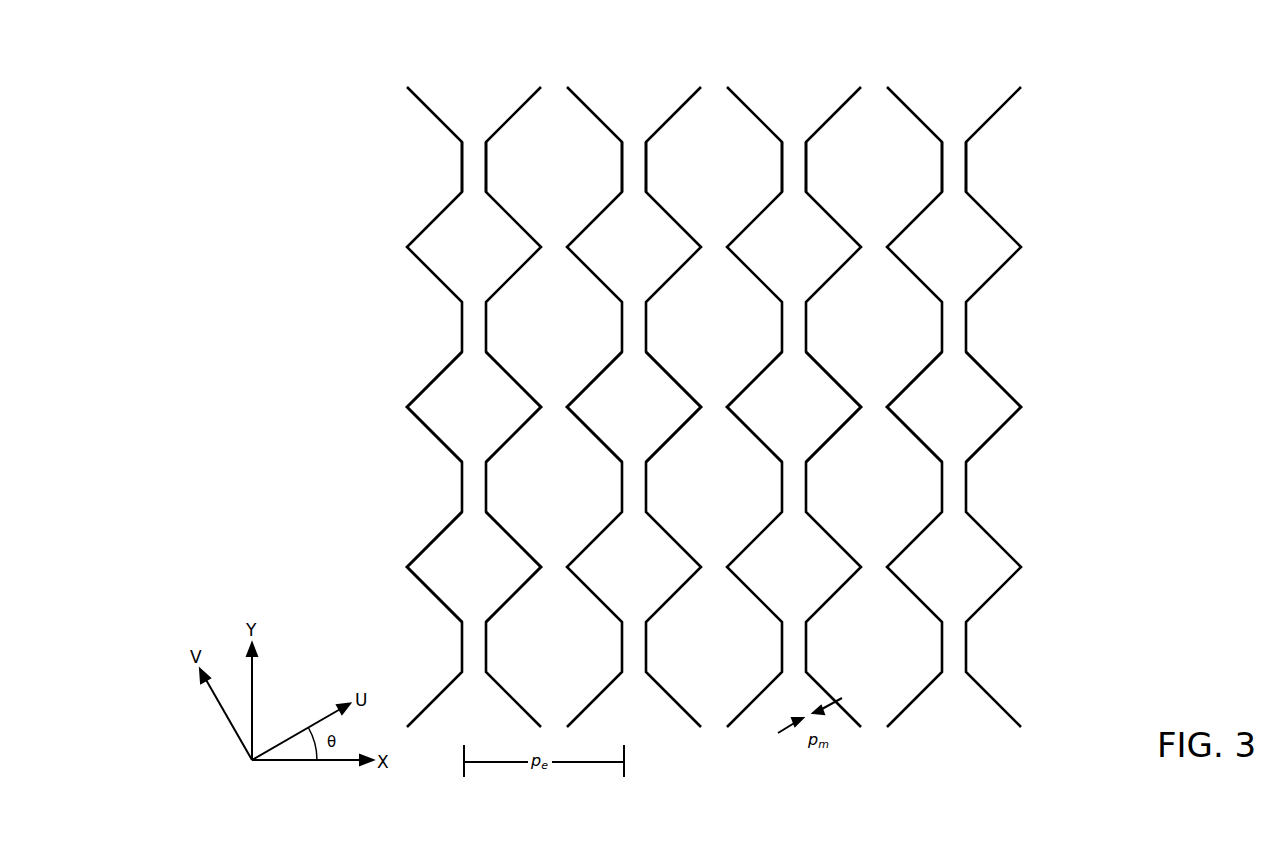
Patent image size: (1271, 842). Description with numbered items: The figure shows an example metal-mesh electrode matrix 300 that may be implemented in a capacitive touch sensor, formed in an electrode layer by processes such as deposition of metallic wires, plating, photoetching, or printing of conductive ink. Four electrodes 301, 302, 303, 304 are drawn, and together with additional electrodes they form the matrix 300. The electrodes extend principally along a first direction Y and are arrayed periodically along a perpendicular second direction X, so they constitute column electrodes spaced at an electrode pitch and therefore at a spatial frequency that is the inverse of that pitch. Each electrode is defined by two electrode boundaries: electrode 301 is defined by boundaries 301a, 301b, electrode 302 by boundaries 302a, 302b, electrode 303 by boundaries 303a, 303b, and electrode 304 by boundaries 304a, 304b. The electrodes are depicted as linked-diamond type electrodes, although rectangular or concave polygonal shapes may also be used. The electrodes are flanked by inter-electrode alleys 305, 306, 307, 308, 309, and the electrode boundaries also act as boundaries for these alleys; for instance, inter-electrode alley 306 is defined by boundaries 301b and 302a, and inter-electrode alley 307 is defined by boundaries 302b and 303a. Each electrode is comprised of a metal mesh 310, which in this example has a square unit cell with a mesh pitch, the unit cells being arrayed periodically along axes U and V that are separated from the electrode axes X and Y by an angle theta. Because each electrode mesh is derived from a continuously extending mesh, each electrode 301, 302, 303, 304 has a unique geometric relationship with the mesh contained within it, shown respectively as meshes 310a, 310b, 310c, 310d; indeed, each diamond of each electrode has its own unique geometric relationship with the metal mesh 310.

The metal-mesh electrode matrix 300 is at (314, 84).
The electrode 301 is at (455, 387).
The electrode 302 is at (639, 387).
The electrode 303 is at (800, 387).
The electrode 304 is at (959, 387).
The electrode boundary 301a is at (432, 169).
The electrode boundary 301b is at (521, 169).
The electrode boundary 302a is at (592, 169).
The electrode boundary 302b is at (681, 169).
The electrode boundary 303a is at (752, 169).
The electrode boundary 303b is at (841, 169).
The electrode boundary 304a is at (912, 169).
The electrode boundary 304b is at (1001, 169).
The inter-electrode alley 305 is at (434, 326).
The inter-electrode alley 306 is at (562, 326).
The inter-electrode alley 307 is at (730, 326).
The inter-electrode alley 308 is at (890, 326).
The inter-electrode alley 309 is at (1027, 326).
The metal mesh 310 is at (447, 567).
The mesh of electrode 301 310a is at (474, 407).
The mesh of electrode 302 310b is at (634, 407).
The mesh of electrode 303 310c is at (794, 407).
The mesh of electrode 304 310d is at (954, 407).